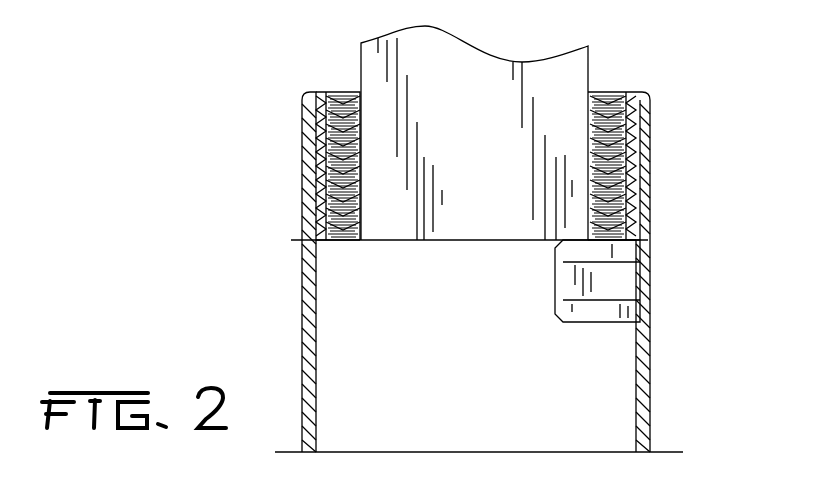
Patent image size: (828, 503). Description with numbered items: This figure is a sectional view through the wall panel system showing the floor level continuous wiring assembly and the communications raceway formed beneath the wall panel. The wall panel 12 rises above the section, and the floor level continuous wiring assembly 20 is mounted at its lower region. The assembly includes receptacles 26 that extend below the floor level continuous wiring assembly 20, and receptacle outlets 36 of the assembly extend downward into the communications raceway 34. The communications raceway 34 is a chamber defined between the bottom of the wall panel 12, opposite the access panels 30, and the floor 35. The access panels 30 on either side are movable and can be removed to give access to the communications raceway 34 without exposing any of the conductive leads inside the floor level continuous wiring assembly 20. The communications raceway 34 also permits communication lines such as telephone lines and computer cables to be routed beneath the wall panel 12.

The wall panel 12 is at (456, 217).
The floor level continuous wiring assembly 20 is at (332, 88).
The receptacles 26 is at (651, 166).
The access panels 30 is at (302, 296).
The communications raceway 34 is at (558, 409).
The floor 35 is at (392, 452).
The receptacle outlets 36 is at (600, 290).